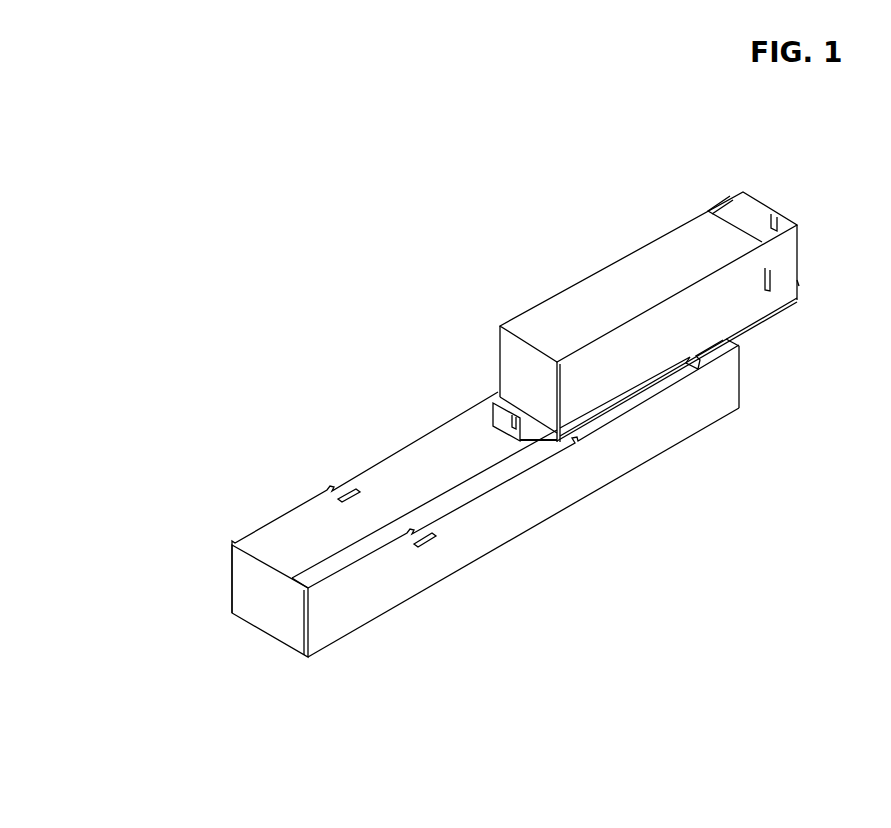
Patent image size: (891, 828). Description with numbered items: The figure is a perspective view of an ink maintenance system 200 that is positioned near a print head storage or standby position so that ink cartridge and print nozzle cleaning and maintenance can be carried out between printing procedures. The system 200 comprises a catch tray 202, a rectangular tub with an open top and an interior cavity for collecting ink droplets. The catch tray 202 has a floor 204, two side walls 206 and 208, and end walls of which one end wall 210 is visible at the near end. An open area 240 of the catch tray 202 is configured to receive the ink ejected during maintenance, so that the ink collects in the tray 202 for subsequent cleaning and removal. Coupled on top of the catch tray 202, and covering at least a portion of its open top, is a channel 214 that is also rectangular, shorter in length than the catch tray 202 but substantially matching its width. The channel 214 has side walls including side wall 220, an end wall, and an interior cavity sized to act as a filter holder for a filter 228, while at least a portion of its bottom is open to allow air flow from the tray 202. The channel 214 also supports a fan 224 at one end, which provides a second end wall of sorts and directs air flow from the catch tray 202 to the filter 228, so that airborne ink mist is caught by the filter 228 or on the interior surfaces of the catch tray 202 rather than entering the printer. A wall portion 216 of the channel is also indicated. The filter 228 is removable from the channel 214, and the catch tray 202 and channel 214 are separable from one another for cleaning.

The ink maintenance system 200 is at (228, 309).
The catch tray 202 is at (451, 598).
The floor 204 is at (393, 538).
The side wall 206 is at (528, 515).
The side wall 208 is at (436, 456).
The end wall 210 is at (261, 605).
The channel 214 is at (530, 268).
The housing front wall 216 is at (727, 316).
The side wall 220 is at (527, 372).
The fan 224 is at (770, 204).
The filter 228 is at (640, 261).
The open area 240 is at (279, 536).